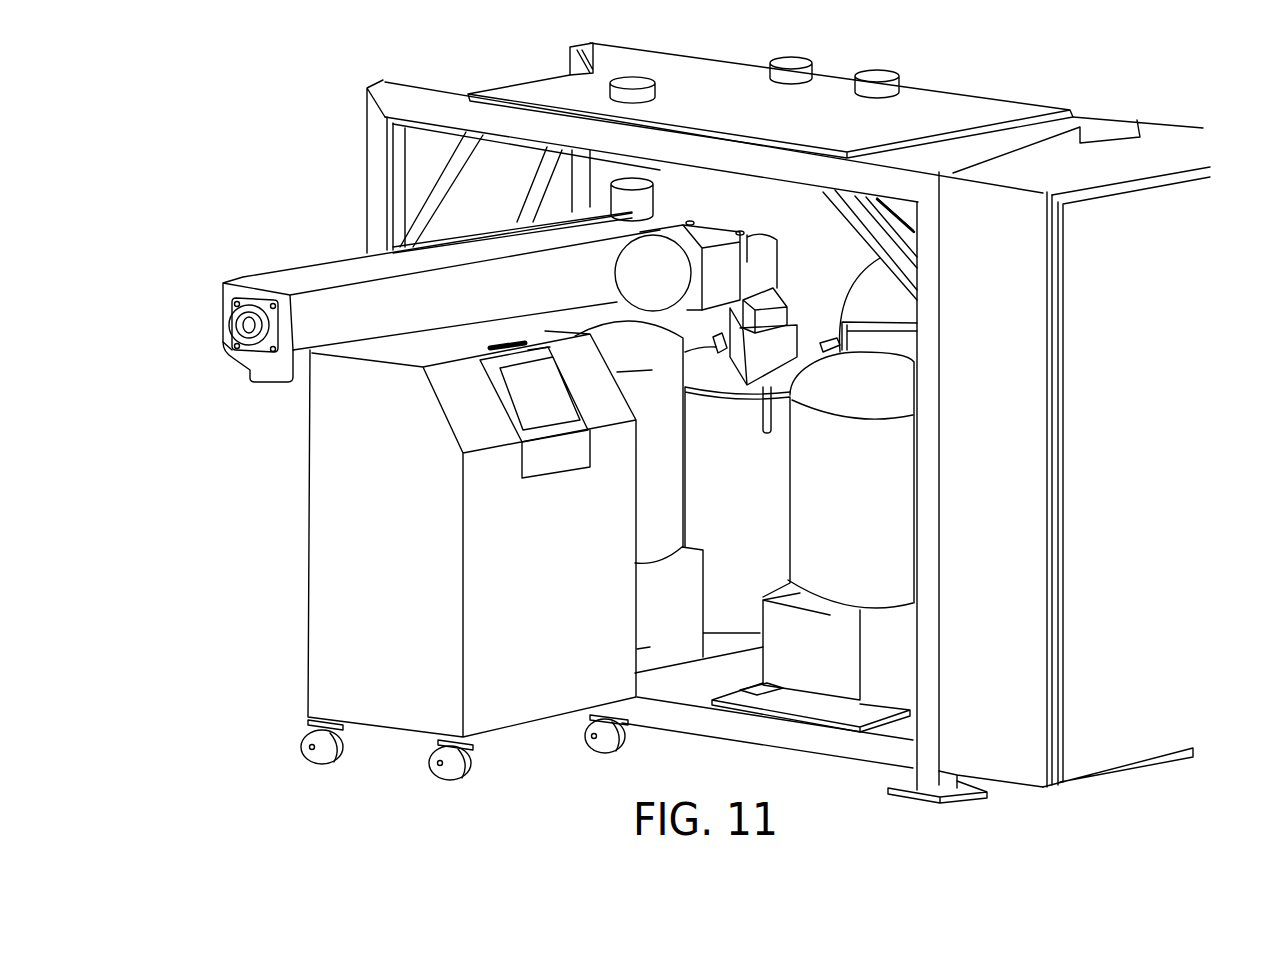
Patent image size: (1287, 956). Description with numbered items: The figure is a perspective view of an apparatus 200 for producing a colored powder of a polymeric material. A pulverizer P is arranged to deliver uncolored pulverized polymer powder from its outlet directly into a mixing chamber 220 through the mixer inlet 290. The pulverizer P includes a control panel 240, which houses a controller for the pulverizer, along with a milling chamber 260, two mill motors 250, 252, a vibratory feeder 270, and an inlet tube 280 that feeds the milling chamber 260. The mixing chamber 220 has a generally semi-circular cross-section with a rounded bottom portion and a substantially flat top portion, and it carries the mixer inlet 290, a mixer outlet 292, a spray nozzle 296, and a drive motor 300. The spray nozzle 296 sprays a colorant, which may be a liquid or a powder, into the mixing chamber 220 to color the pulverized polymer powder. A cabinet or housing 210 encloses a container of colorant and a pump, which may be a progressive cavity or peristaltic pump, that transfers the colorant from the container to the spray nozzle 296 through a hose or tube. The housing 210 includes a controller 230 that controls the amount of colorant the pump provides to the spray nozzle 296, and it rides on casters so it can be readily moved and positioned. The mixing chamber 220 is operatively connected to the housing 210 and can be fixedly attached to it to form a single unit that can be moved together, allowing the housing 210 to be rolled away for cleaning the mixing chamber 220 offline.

The apparatus for producing a colored powder 200 is at (232, 148).
The pulverizer P is at (1018, 75).
The housing 210 is at (322, 583).
The mixing chamber 220 is at (362, 272).
The controller 230 is at (558, 403).
The control panel 240 is at (1141, 483).
The mill motor 250 is at (890, 506).
The mill motor 252 is at (662, 365).
The milling chamber 260 is at (760, 493).
The vibratory feeder 270 is at (802, 344).
The inlet tube 280 is at (770, 258).
The mixer inlet 290 is at (622, 176).
The mixer outlet 292 is at (272, 386).
The spray nozzle 296 is at (642, 183).
The drive motor 300 is at (708, 224).